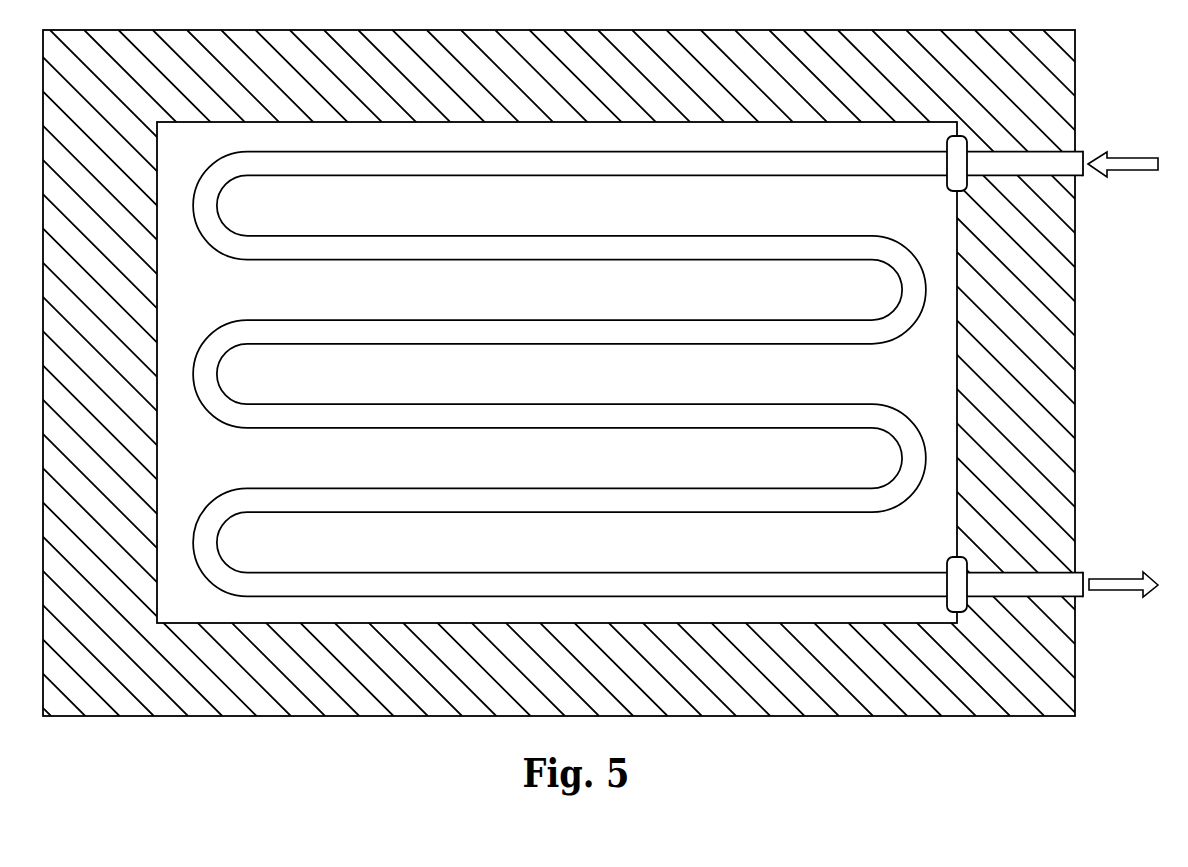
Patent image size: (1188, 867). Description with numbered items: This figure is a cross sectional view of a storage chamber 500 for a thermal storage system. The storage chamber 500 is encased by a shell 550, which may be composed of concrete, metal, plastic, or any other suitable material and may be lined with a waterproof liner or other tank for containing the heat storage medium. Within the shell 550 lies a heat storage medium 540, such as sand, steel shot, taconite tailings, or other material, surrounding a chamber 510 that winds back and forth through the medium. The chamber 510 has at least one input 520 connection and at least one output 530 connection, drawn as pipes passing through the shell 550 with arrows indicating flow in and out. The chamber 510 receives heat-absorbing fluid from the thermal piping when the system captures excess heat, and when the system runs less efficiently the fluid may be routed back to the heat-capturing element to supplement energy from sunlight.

The storage chamber 500 is at (122, 722).
The shell 550 is at (231, 703).
The heat storage medium 540 is at (380, 622).
The chamber 510 is at (525, 611).
The input 520 is at (1089, 184).
The output 530 is at (1090, 607).